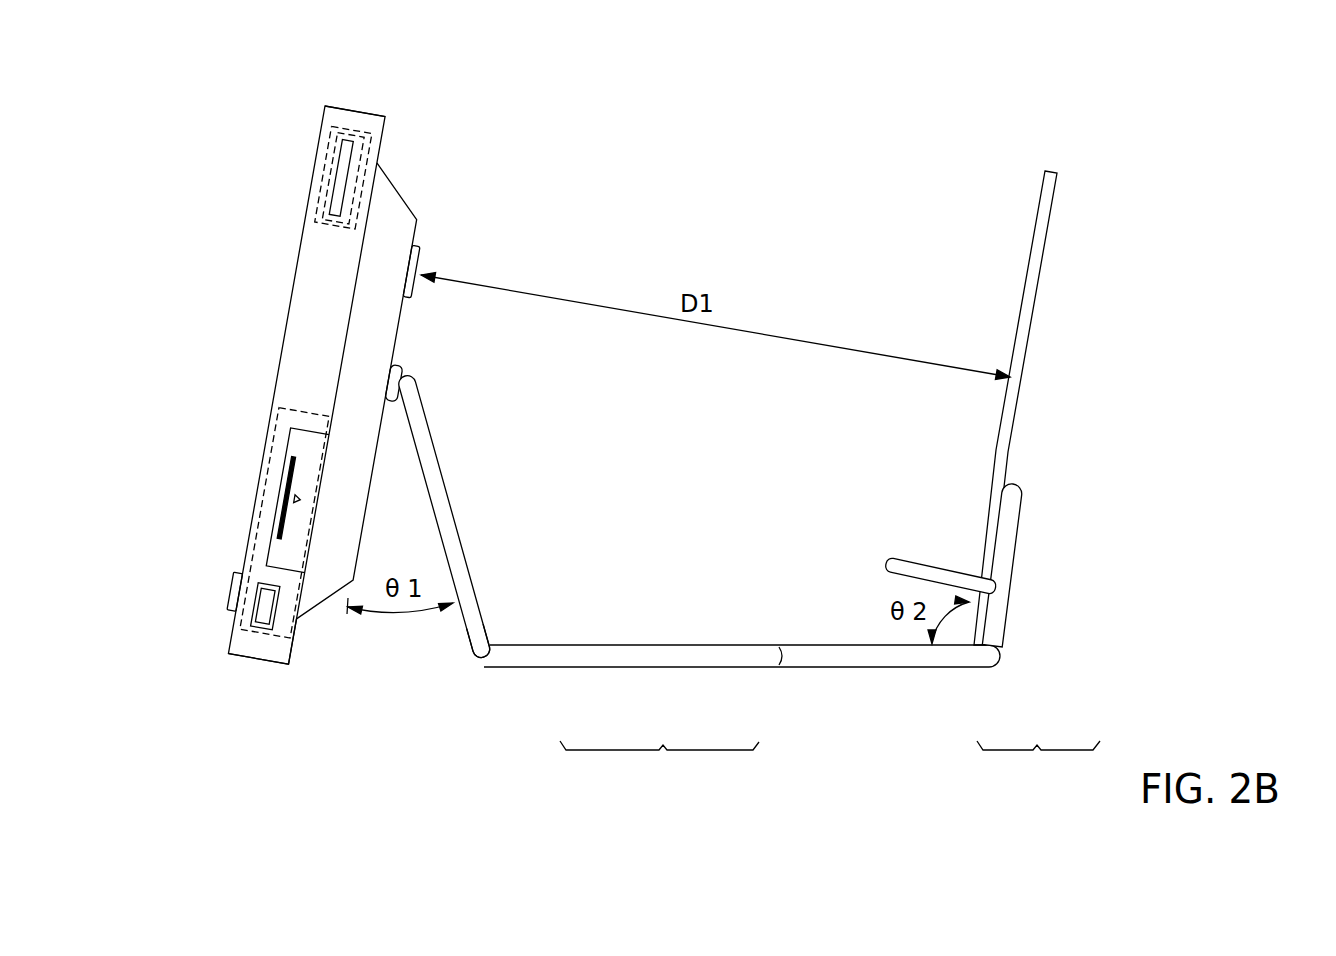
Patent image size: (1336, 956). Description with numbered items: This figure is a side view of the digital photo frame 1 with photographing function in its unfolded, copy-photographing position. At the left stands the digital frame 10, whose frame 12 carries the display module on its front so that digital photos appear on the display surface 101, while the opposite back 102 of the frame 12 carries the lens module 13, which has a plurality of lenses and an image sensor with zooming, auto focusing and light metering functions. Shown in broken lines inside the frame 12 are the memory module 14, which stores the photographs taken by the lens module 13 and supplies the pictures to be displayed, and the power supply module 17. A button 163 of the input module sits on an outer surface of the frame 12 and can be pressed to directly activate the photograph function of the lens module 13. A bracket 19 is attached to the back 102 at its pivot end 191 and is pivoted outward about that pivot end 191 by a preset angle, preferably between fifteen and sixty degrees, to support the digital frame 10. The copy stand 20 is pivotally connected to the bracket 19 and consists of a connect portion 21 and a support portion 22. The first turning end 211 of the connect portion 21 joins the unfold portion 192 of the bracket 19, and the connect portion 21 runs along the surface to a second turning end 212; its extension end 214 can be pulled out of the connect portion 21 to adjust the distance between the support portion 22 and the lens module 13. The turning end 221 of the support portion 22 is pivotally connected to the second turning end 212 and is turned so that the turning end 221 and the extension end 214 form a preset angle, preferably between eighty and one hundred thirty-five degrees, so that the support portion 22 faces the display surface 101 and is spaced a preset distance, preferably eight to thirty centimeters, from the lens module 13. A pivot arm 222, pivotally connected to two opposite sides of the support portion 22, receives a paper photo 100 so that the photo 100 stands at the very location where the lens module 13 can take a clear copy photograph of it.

The digital photo frame 1 is at (1168, 120).
The digital frame 10 is at (392, 163).
The frame 12 is at (327, 109).
The memory module 14 is at (322, 183).
The lens module 13 is at (418, 250).
The power supply module 17 is at (262, 504).
The button 163 is at (228, 590).
The display surface 101 is at (207, 650).
The back 102 is at (300, 658).
The pivot end 191 is at (407, 387).
The bracket 19 is at (477, 492).
The unfold portion 192 is at (482, 650).
The paper photo 100 is at (1038, 263).
The copy stand 20 is at (772, 731).
The connect portion 21 is at (659, 763).
The first turning end 211 is at (500, 658).
The extension end 214 is at (780, 660).
The second turning end 212 is at (982, 655).
The support portion 22 is at (992, 634).
The turning end 221 is at (987, 634).
The pivot arm 222 is at (1003, 587).